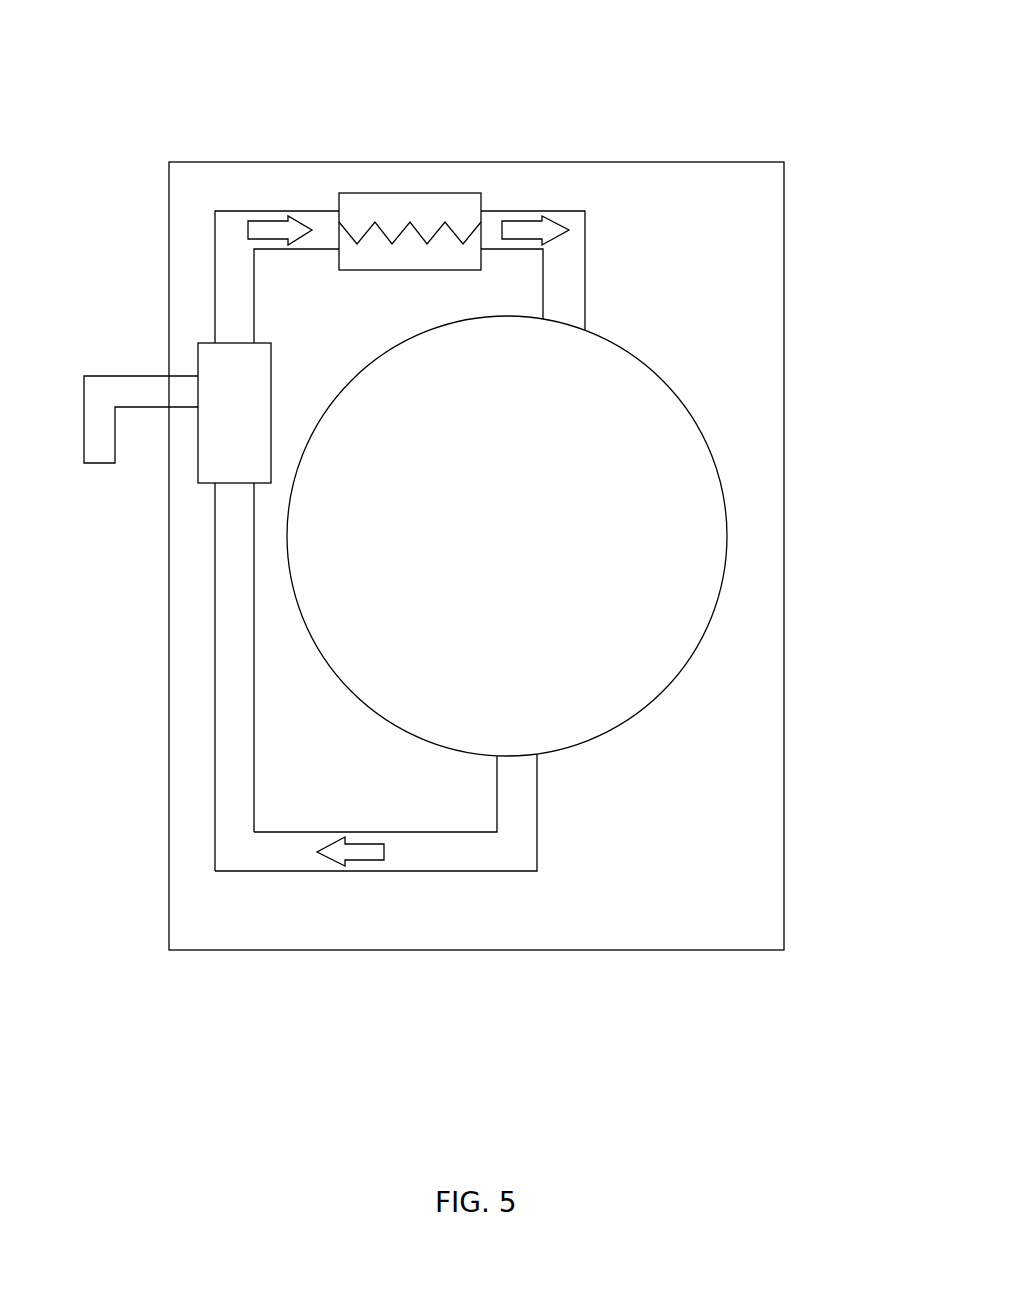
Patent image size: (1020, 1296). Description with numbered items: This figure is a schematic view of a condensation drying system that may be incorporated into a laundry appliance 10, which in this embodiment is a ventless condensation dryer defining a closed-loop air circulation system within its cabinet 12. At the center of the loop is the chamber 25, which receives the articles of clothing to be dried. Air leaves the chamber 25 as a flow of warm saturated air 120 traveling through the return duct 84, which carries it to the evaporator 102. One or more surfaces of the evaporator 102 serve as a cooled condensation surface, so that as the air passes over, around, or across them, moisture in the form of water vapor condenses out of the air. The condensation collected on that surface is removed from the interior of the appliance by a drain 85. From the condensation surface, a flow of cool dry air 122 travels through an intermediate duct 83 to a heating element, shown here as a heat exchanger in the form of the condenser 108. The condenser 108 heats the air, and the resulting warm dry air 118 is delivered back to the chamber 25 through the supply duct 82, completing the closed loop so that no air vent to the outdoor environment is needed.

The laundry appliance 10 is at (175, 96).
The cabinet 12 is at (785, 820).
The chamber 25 is at (523, 548).
The supply duct 82 is at (567, 282).
The intermediate duct 83 is at (233, 253).
The return duct 84 is at (282, 855).
The drain 85 is at (100, 402).
The evaporator 102 is at (218, 438).
The condenser 108 is at (427, 194).
The warm dry air 118 is at (535, 232).
The warm saturated air 120 is at (359, 852).
The cool dry air 122 is at (267, 232).